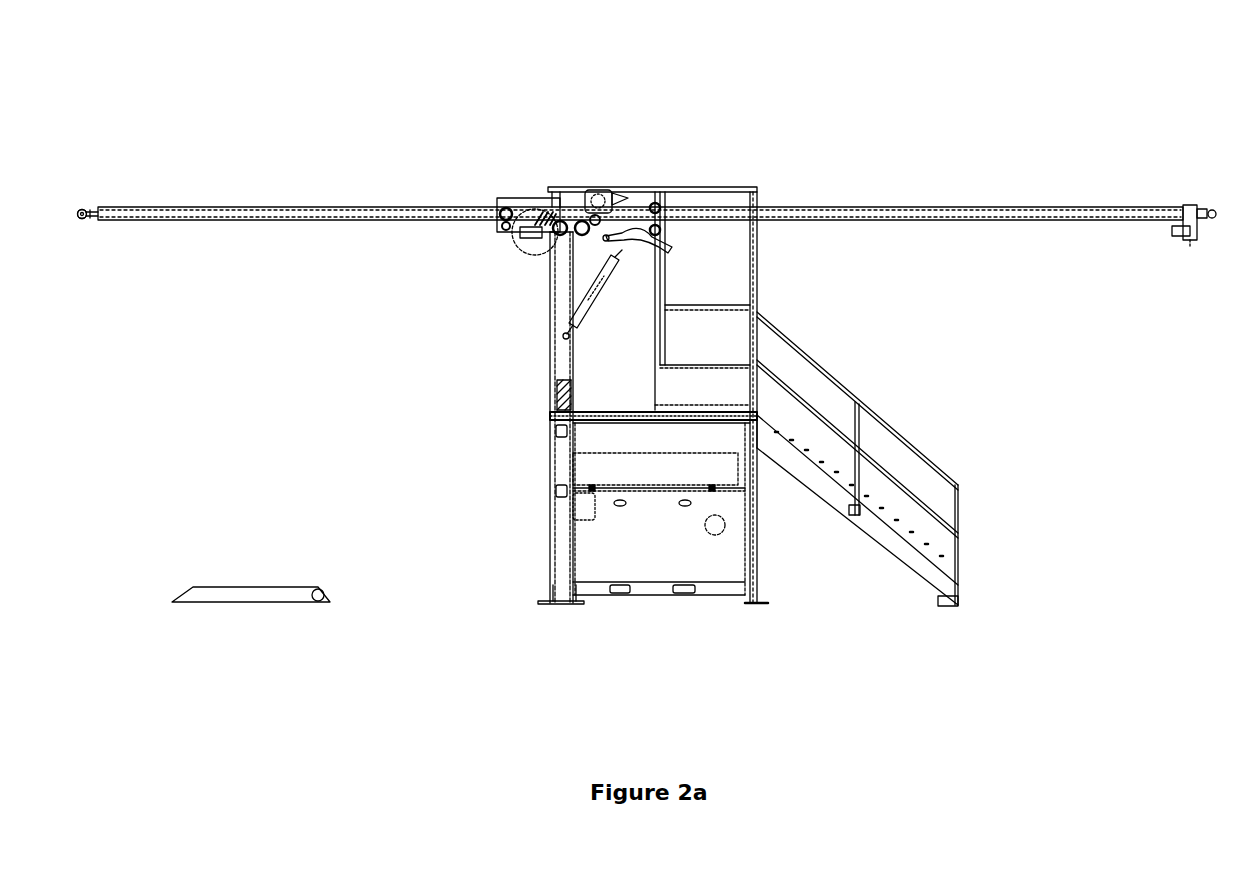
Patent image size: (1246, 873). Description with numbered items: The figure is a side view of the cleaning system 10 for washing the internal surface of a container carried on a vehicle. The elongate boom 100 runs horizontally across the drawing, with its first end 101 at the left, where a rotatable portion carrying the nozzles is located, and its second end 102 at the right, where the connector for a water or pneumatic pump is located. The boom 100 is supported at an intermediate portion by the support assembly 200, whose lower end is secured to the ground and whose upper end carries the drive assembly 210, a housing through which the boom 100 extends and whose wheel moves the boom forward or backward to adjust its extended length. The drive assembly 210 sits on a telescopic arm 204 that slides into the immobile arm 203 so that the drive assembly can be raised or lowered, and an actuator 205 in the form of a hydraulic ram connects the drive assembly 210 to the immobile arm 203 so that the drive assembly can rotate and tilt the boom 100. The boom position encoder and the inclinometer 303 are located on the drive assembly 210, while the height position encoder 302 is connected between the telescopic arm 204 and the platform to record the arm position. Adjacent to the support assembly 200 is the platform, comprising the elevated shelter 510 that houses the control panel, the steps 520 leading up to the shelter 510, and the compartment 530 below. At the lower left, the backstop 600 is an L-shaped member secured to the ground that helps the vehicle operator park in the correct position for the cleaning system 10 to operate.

The cleaning system 10 is at (882, 86).
The elongate boom 100 is at (345, 212).
The first end 101 is at (95, 246).
The second end 102 is at (1184, 258).
The support assembly 200 is at (498, 500).
The immobile arm 203 is at (562, 543).
The telescopic arm 204 is at (553, 335).
The actuator 205 is at (588, 293).
The drive assembly 210 is at (625, 228).
The height position encoder 302 is at (562, 395).
The inclinometer 303 is at (600, 208).
The shelter 510 is at (758, 266).
The steps 520 is at (889, 548).
The compartment 530 is at (638, 560).
The backstop 600 is at (235, 594).